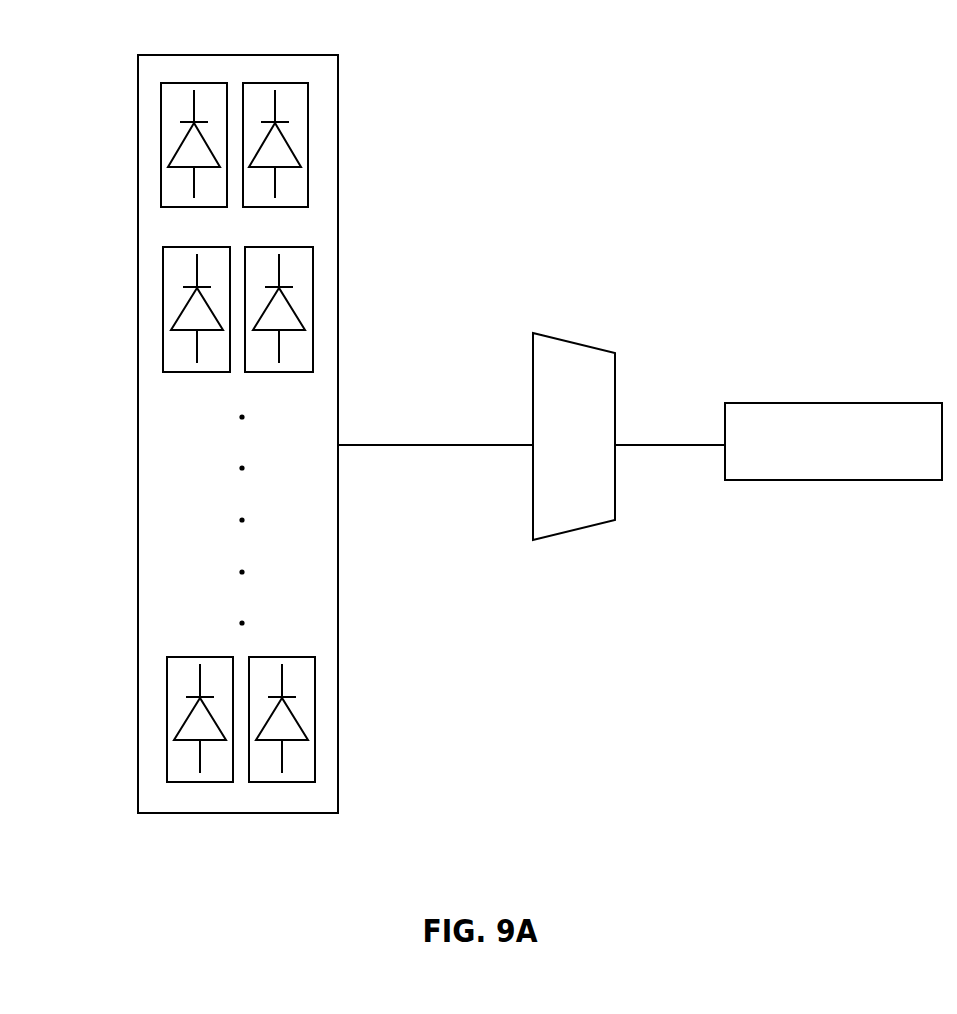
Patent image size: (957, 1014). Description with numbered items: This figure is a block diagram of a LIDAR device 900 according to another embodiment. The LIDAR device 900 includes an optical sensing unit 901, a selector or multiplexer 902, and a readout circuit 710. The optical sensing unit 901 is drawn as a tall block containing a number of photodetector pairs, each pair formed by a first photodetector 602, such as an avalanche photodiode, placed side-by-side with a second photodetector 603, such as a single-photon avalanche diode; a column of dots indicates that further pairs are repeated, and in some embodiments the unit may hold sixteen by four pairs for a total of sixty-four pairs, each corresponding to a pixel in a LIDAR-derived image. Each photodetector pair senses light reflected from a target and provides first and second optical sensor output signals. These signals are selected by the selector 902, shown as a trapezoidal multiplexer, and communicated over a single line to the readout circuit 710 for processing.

The LIDAR device 900 is at (591, 92).
The optical sensing unit 901 is at (340, 55).
The first photodetector 602 is at (161, 134).
The second photodetector 603 is at (308, 138).
The selector 902 is at (557, 468).
The readout circuit 710 is at (819, 461).